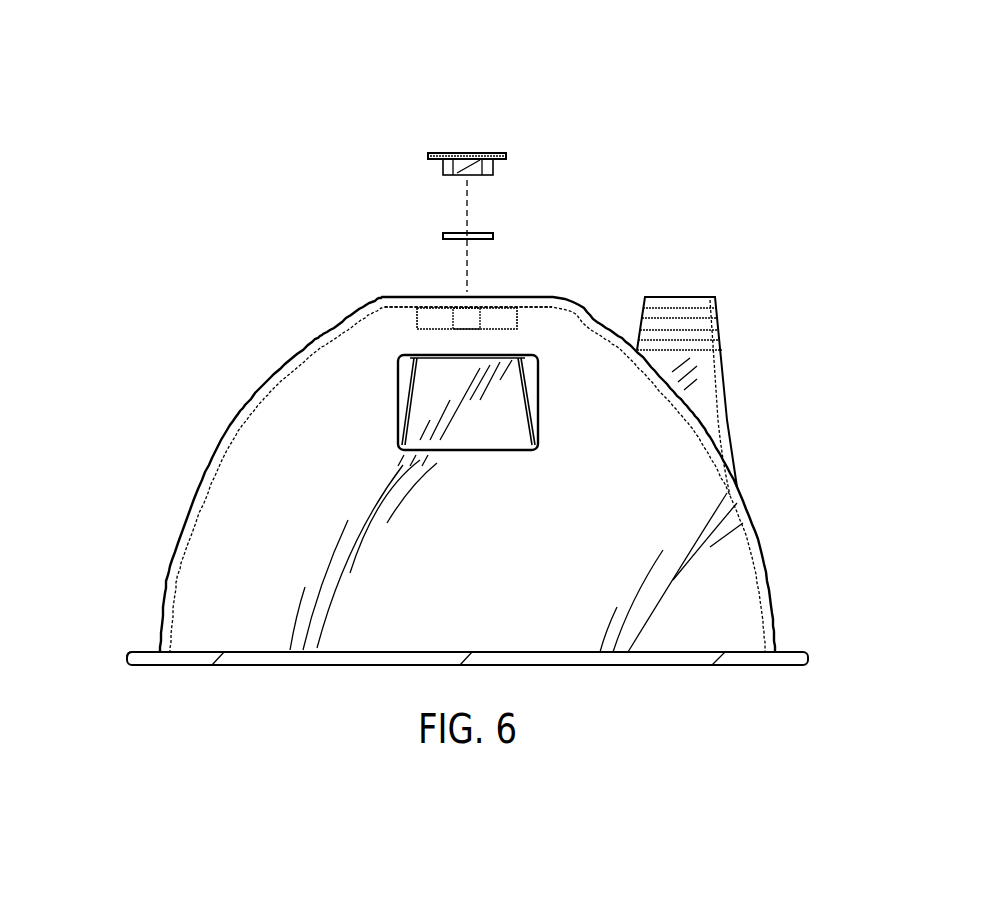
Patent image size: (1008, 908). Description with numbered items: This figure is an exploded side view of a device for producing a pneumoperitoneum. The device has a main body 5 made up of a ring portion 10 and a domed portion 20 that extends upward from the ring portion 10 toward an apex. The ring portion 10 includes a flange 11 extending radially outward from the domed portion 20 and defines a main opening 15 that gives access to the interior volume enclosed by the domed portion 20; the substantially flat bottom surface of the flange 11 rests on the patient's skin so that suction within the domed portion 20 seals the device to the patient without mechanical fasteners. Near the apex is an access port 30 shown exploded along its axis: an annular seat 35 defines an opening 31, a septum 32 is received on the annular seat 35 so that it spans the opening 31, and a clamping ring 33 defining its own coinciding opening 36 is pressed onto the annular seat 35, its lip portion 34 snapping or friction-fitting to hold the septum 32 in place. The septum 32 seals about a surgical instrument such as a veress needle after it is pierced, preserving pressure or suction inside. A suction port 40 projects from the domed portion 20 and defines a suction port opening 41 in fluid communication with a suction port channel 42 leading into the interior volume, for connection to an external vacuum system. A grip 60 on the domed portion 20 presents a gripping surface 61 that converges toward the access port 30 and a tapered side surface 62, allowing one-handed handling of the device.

The main body 5 is at (218, 243).
The ring portion 10 is at (127, 677).
The flange 11 is at (137, 652).
The main opening 15 is at (630, 673).
The domed portion 20 is at (597, 510).
The access port 30 is at (417, 283).
The opening 31 is at (468, 322).
The septum 32 is at (508, 235).
The clamping ring 33 is at (522, 160).
The lip portion 34 is at (498, 152).
The annular seat 35 is at (445, 317).
The opening 36 is at (462, 165).
The suction port 40 is at (728, 327).
The suction port opening 41 is at (685, 295).
The suction port channel 42 is at (685, 332).
The grip 60 is at (402, 360).
The gripping surface 61 is at (457, 383).
The side surface 62 is at (387, 370).